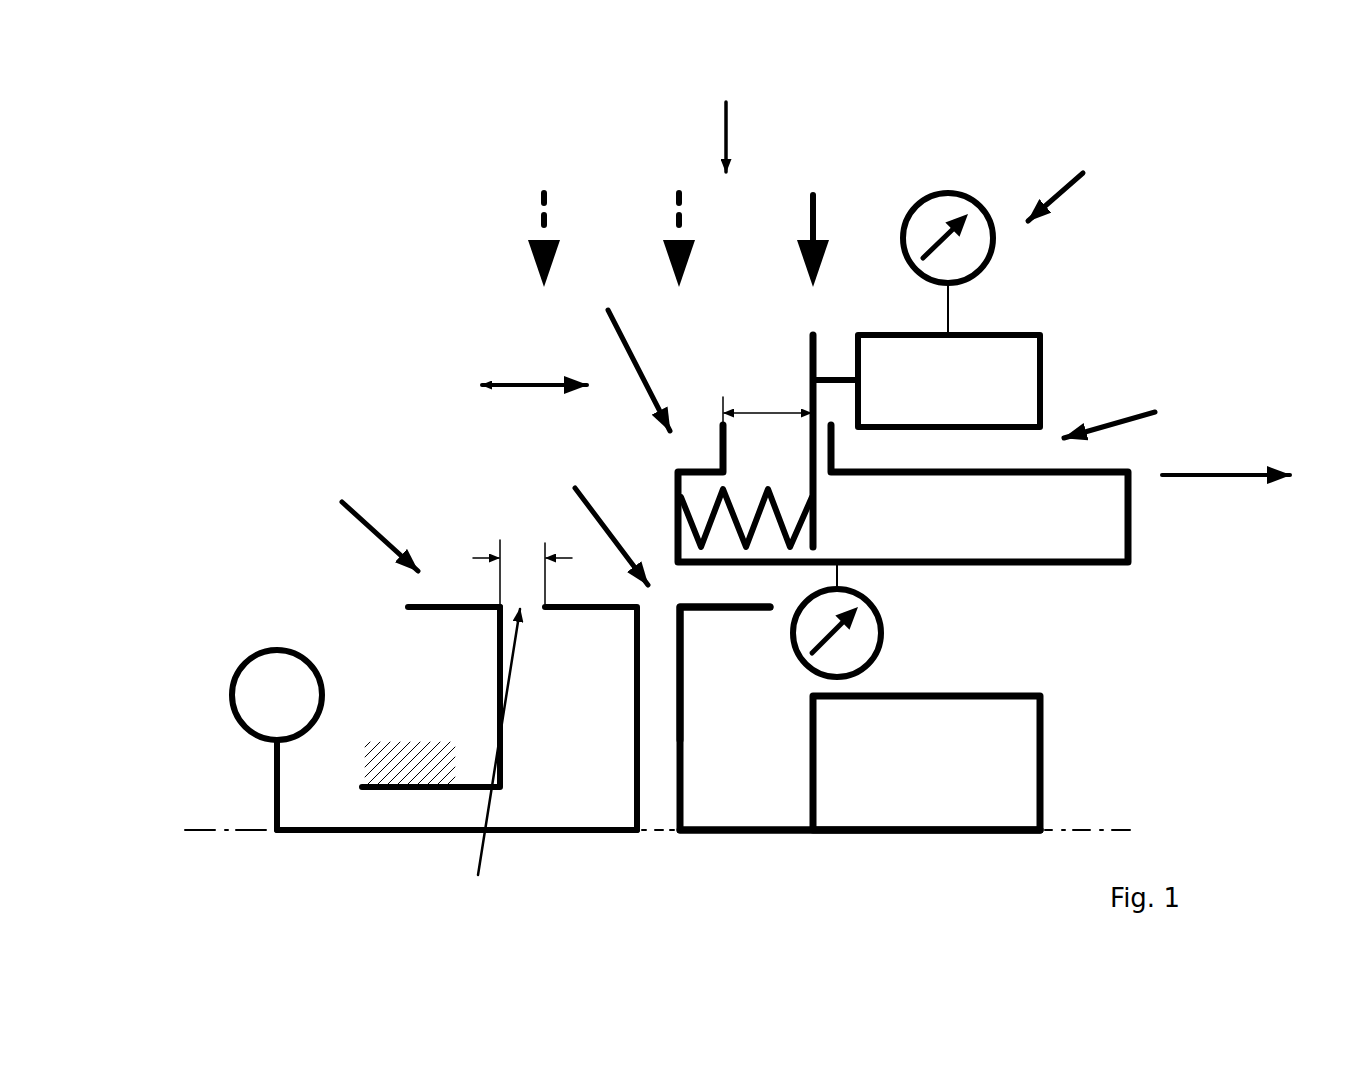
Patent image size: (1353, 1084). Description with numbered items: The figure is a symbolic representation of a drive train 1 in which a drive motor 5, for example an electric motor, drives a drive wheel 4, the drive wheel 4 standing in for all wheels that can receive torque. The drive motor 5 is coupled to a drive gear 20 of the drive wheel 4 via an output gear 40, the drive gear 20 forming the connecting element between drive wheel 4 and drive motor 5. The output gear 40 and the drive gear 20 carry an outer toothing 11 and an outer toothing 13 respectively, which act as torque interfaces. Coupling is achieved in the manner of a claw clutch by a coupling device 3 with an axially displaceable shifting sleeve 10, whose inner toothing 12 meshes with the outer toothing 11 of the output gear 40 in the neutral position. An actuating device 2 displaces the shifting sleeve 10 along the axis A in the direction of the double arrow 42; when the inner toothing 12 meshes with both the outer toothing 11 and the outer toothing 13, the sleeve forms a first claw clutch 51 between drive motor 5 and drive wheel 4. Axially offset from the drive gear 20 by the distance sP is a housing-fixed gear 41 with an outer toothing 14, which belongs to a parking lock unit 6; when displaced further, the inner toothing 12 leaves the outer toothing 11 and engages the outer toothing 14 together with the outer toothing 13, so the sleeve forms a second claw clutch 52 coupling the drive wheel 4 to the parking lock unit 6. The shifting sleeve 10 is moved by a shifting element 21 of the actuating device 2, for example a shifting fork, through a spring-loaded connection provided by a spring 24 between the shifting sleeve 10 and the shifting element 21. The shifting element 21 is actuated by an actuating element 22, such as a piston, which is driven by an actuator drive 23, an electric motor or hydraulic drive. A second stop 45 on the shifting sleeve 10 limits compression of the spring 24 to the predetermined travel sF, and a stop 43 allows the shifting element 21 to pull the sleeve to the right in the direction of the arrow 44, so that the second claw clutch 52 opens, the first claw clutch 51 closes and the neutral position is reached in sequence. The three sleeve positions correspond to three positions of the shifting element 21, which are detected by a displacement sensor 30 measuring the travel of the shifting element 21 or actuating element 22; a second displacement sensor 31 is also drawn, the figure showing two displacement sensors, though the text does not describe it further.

The drive train 1 is at (727, 117).
The actuating device 2 is at (1066, 179).
The coupling device 3 is at (1118, 413).
The drive wheel 4 is at (270, 690).
The drive motor 5 is at (1002, 729).
The parking lock unit 6 is at (361, 519).
The shifting sleeve 10 is at (1077, 526).
The outer toothing 11 is at (720, 607).
The inner toothing 12 is at (747, 563).
The outer toothing 13 is at (593, 607).
The outer toothing 14 is at (462, 608).
The drive gear 20 is at (633, 694).
The shifting element 21 is at (812, 378).
The actuating element 22 is at (867, 158).
The actuator drive 23 is at (988, 385).
The spring 24 is at (715, 497).
The displacement sensor 30 is at (942, 215).
The displacement measuring instrument 31 is at (865, 630).
The output gear 40 is at (682, 745).
The fixed gear 41 is at (473, 605).
The double arrow 42 is at (650, 150).
The stop 43 is at (890, 427).
The arrow 44 is at (1243, 475).
The second stop 45 is at (720, 438).
The first claw clutch 51 is at (599, 518).
The second claw clutch 52 is at (486, 761).
The axis A is at (197, 828).
The distance sP is at (522, 553).
The predetermined travel sF is at (767, 399).